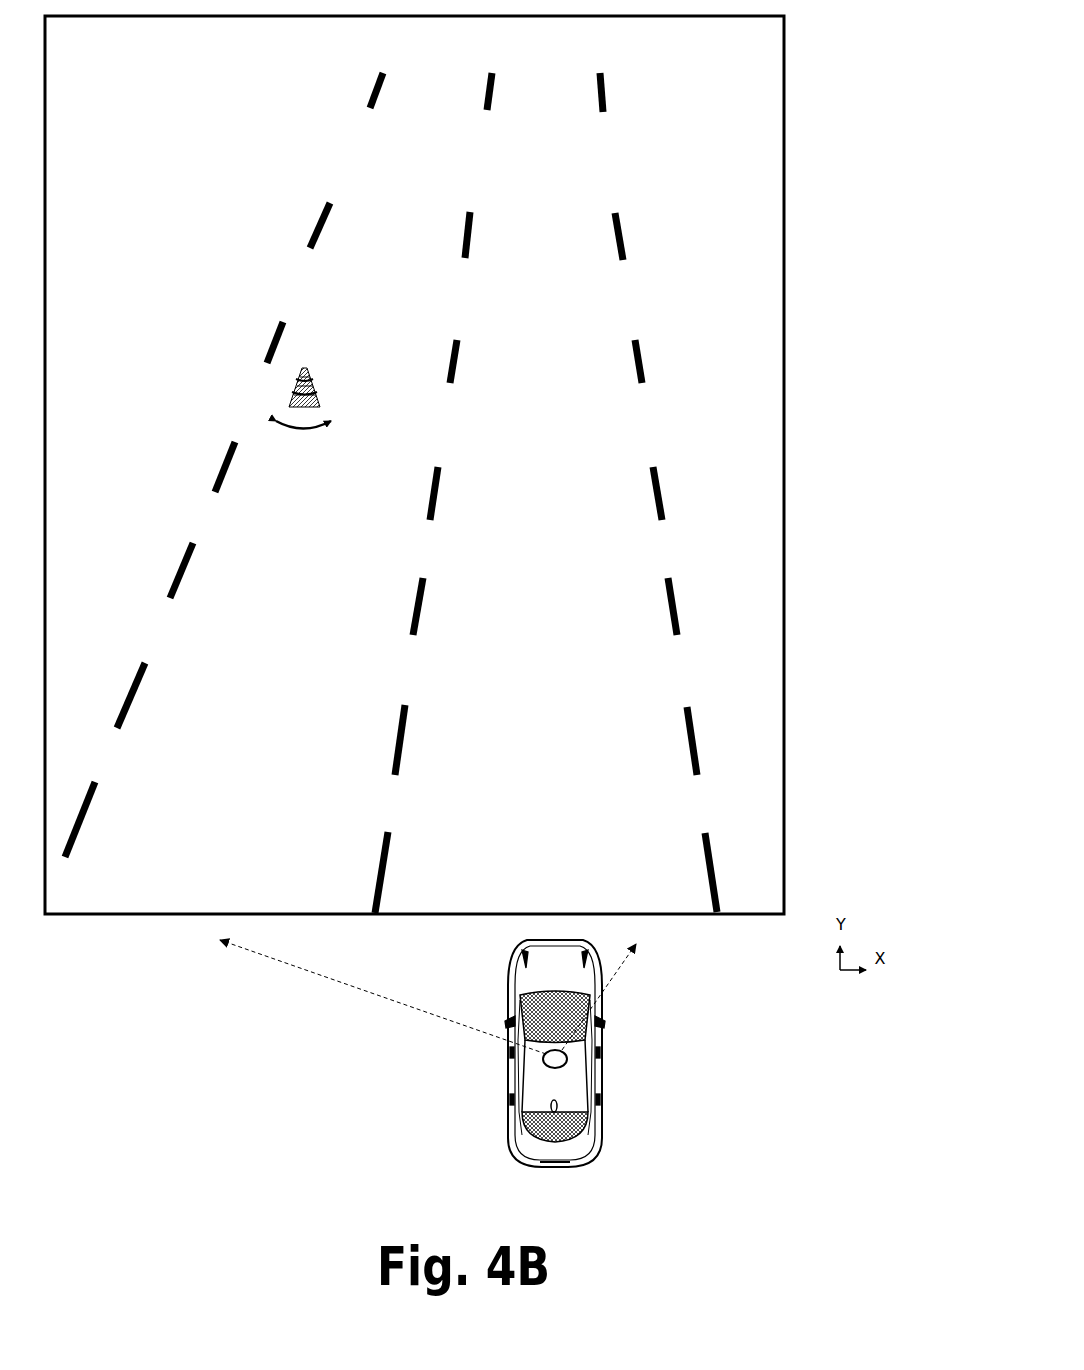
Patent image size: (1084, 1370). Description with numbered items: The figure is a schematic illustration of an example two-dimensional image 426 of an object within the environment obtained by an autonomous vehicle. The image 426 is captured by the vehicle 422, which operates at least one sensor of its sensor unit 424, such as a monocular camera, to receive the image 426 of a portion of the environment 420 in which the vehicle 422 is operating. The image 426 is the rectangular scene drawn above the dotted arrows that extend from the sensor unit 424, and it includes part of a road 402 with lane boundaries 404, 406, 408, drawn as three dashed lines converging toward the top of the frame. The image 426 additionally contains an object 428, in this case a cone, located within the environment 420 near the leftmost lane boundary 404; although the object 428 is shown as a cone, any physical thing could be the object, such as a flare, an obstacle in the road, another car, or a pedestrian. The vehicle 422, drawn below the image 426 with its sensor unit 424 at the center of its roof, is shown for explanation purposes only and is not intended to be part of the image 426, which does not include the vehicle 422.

The road 402 is at (274, 120).
The lane boundary 404 is at (385, 75).
The lane boundary 406 is at (494, 75).
The lane boundary 408 is at (602, 75).
The environment 420 is at (916, 59).
The vehicle 422 is at (428, 1053).
The sensor unit 424 is at (545, 1078).
The image 426 is at (785, 385).
The object 428 is at (302, 369).